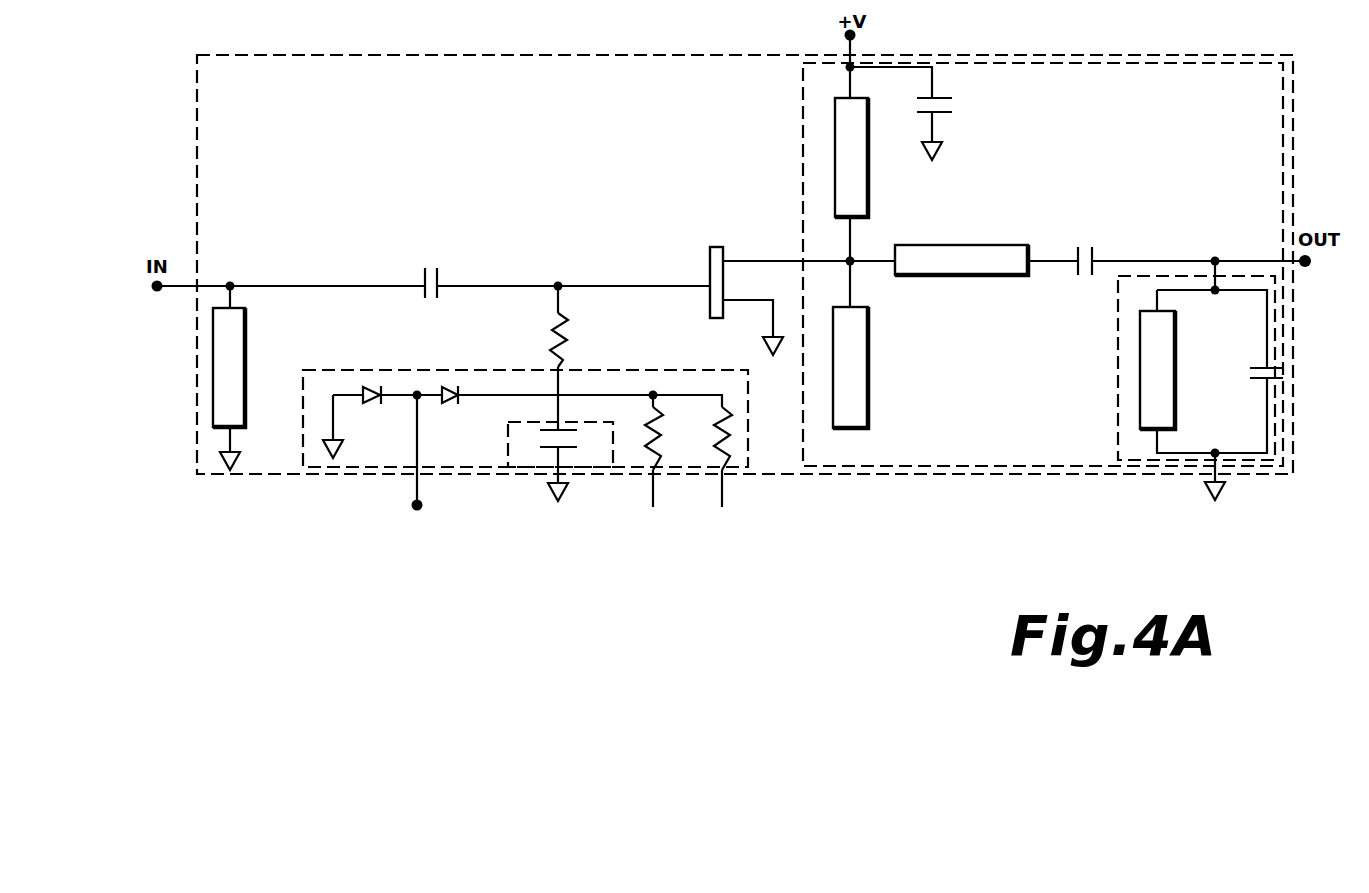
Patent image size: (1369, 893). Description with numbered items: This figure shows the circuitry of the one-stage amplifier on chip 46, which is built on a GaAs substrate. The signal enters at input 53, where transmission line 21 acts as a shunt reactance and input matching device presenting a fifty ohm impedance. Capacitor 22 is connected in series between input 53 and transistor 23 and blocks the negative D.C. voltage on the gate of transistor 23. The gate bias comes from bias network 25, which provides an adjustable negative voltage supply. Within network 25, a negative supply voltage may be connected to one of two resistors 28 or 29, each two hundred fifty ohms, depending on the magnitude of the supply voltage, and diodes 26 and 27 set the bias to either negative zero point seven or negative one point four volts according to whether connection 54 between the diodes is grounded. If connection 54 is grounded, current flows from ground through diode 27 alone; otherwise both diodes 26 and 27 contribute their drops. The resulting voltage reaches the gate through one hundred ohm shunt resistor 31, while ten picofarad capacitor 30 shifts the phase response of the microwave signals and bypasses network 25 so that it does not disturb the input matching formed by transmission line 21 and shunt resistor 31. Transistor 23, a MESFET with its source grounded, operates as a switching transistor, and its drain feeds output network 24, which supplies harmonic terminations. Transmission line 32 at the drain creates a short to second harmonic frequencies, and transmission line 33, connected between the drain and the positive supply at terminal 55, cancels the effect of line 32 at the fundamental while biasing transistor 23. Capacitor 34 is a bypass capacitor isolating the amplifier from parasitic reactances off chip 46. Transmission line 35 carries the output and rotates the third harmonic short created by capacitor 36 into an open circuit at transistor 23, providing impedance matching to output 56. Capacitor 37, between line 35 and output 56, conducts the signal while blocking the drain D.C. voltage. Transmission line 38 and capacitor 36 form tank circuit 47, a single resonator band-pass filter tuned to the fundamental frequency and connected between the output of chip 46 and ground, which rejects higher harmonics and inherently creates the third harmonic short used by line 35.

The transmission line 21 is at (248, 331).
The capacitor 22 is at (440, 273).
The transistor 23 is at (715, 245).
The output network 24 is at (803, 137).
The bias network 25 is at (393, 369).
The diode 26 is at (375, 404).
The diode 27 is at (452, 404).
The resistor 28 is at (650, 416).
The resistor 29 is at (718, 428).
The capacitor 30 is at (574, 430).
The shunt resistor 31 is at (568, 340).
The transmission line 32 is at (870, 355).
The transmission line 33 is at (870, 187).
The bypass capacitor 34 is at (952, 100).
The transmission line 35 is at (960, 245).
The capacitor 36 is at (1254, 376).
The capacitor 37 is at (1093, 256).
The transmission line 38 is at (1176, 332).
The chip 46 is at (585, 55).
The tank circuit 47 is at (1118, 375).
The input 53 is at (155, 293).
The connection 54 is at (410, 509).
The terminal 55 is at (858, 35).
The output 56 is at (1311, 266).